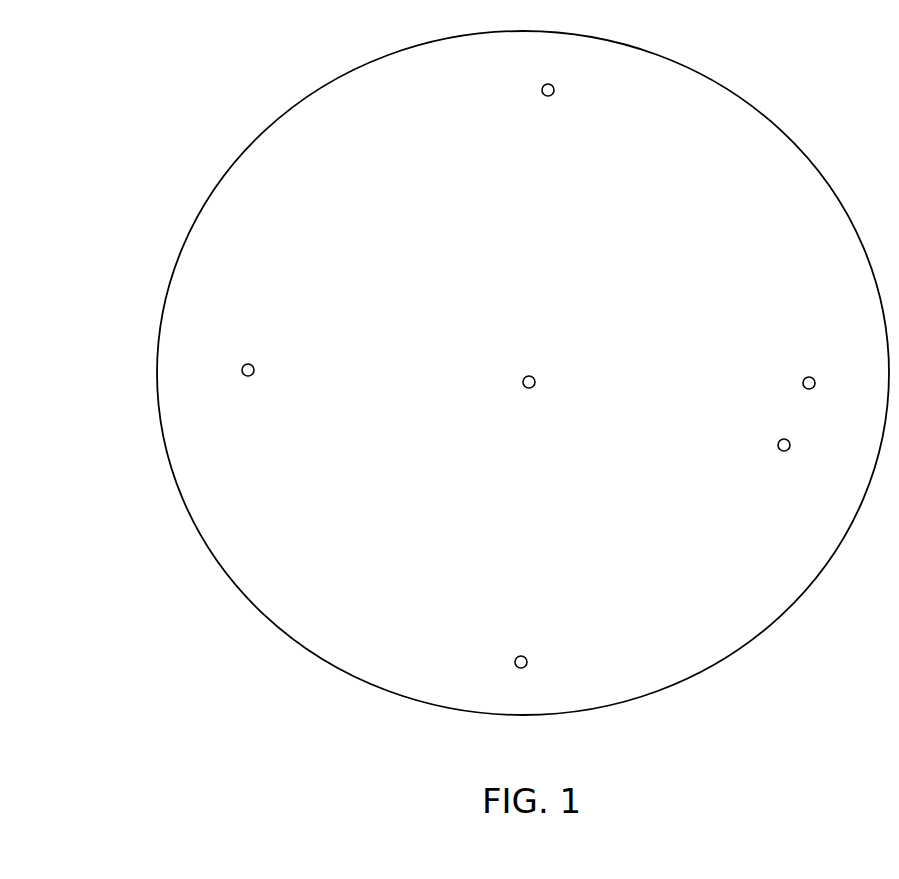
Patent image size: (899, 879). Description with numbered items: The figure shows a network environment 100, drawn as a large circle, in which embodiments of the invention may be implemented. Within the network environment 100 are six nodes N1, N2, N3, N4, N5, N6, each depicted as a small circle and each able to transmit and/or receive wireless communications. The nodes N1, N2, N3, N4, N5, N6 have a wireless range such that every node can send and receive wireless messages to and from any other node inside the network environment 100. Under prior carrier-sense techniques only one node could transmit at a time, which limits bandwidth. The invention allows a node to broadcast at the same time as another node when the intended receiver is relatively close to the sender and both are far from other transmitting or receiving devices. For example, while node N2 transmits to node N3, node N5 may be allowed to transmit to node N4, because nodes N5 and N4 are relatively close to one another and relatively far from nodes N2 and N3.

The network environment 100 is at (150, 153).
The node N1 is at (541, 363).
The node N2 is at (251, 343).
The node N3 is at (572, 85).
The node N4 is at (811, 358).
The node N5 is at (760, 471).
The node N6 is at (498, 643).